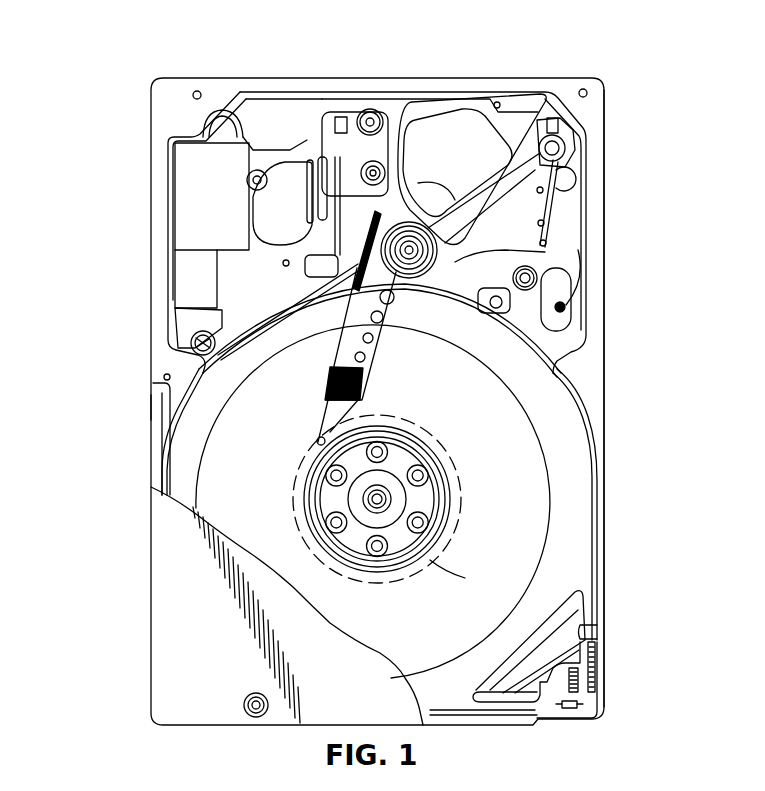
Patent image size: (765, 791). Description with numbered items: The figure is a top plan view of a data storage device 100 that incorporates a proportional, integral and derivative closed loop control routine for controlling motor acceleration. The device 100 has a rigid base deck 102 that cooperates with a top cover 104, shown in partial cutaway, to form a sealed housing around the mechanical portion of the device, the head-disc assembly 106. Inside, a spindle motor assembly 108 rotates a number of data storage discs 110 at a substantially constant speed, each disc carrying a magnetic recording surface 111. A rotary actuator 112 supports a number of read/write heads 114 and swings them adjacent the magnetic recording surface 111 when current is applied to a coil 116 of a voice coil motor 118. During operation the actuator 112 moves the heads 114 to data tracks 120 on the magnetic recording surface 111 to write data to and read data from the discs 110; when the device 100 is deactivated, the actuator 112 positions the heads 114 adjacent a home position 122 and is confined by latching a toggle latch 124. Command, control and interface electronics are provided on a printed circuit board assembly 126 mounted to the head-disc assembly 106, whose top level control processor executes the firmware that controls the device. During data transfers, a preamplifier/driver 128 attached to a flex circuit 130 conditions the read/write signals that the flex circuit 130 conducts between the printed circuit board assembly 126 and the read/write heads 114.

The data storage device 100 is at (215, 60).
The base deck 102 is at (160, 197).
The top cover 104 is at (185, 582).
The head-disc assembly 106 is at (607, 430).
The spindle motor assembly 108 is at (390, 473).
The data storage discs 110 is at (538, 637).
The magnetic recording surface 111 is at (483, 517).
The rotary actuator 112 is at (378, 360).
The read/write heads 114 is at (318, 438).
The coil 116 is at (450, 117).
The voice coil motor 118 is at (480, 100).
The data tracks 120 is at (213, 428).
The home position 122 is at (430, 560).
The toggle latch 124 is at (584, 122).
The printed circuit board assembly 126 is at (148, 407).
The preamplifier/driver 128 is at (250, 247).
The flex circuit 130 is at (253, 203).